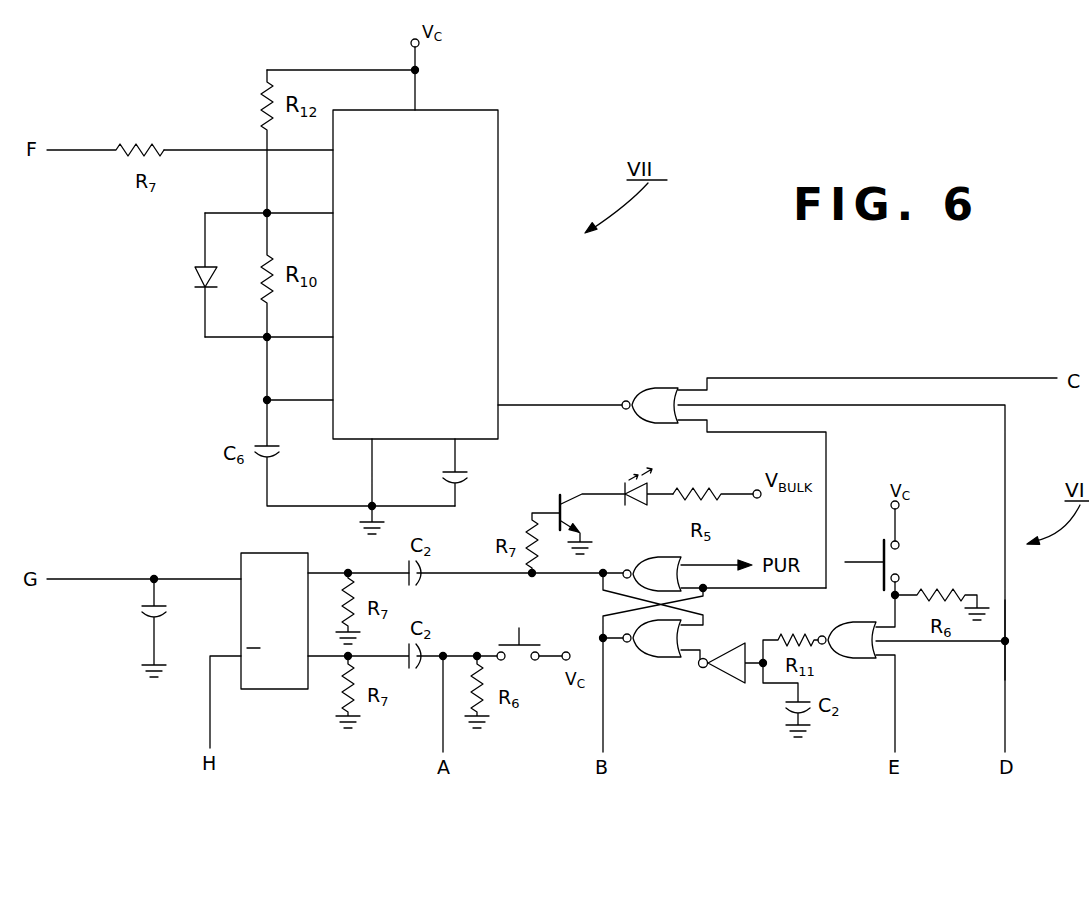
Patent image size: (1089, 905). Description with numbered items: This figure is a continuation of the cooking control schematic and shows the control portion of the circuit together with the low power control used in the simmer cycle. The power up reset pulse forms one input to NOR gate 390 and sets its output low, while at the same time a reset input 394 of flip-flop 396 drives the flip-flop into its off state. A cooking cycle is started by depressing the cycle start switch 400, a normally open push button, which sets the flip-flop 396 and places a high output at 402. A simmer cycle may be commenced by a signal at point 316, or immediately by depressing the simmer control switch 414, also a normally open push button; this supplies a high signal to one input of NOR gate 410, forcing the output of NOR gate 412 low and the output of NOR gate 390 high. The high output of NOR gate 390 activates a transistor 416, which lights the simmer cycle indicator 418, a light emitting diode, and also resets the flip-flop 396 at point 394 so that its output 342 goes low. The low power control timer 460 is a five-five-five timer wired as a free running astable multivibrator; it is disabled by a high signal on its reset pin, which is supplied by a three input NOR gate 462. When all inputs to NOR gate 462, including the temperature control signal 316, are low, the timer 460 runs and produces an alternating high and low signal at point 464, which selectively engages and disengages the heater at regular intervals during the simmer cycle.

The temperature control signal point 316 is at (1006, 641).
The output of flip-flop 342 is at (207, 682).
The NOR gate 390 is at (653, 556).
The reset input of flip-flop 394 is at (310, 569).
The flip-flop 396 is at (255, 553).
The cycle start switch 400 is at (543, 644).
The high output point 402 is at (153, 578).
The NOR gate 410 is at (840, 622).
The NOR gate 412 is at (658, 658).
The simmer control switch 414 is at (857, 562).
The transistor 416 is at (572, 496).
The simmer cycle indicator 418 is at (648, 488).
The low power control timer 460 is at (430, 283).
The three input NOR gate 462 is at (653, 388).
The voltage point 464 is at (193, 148).